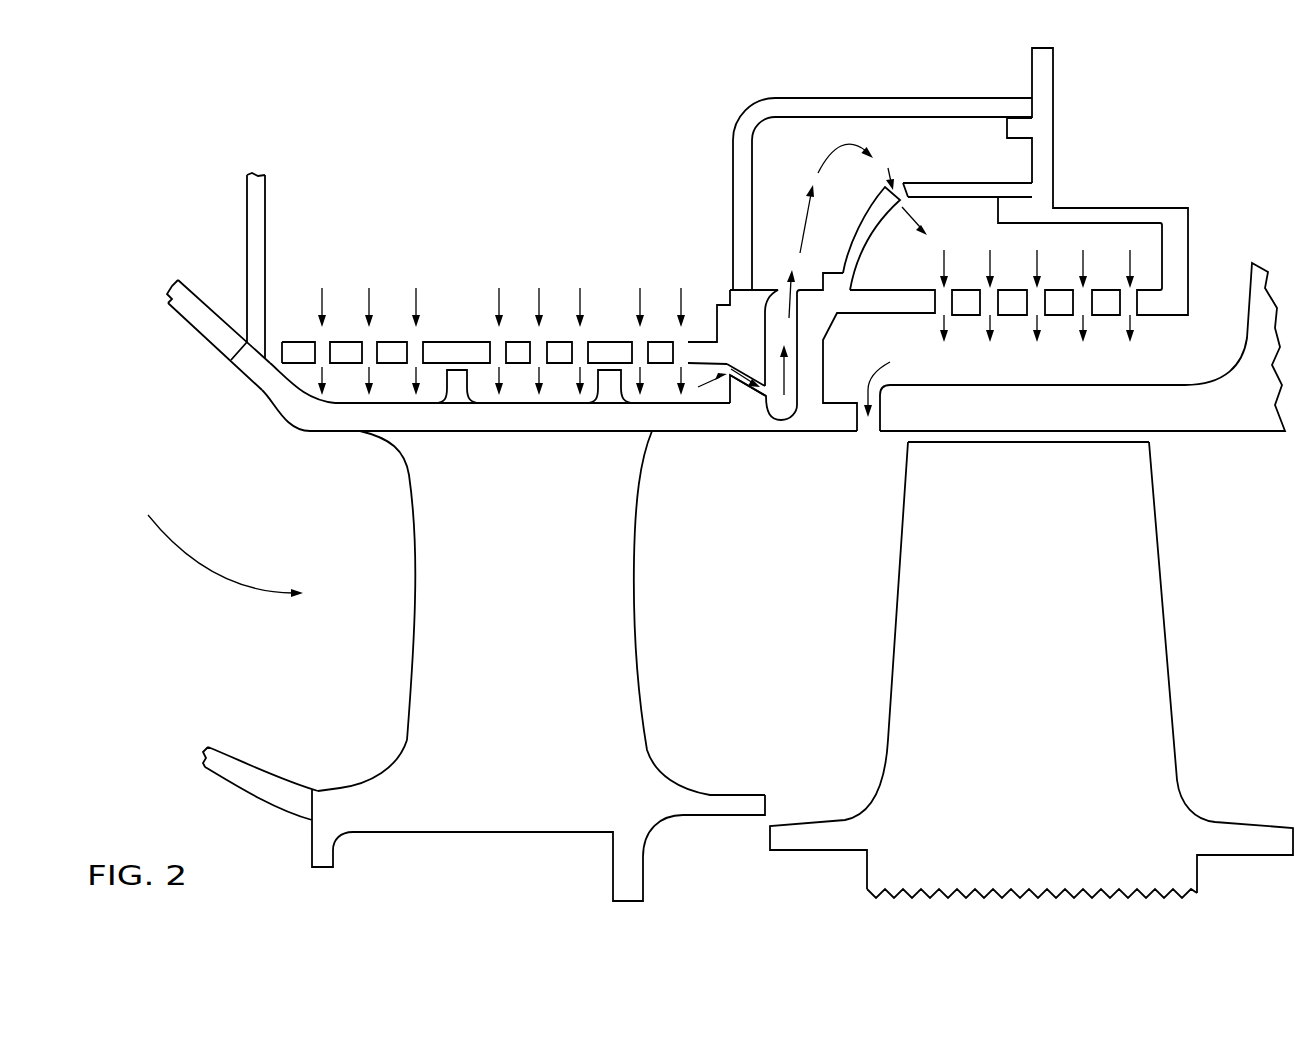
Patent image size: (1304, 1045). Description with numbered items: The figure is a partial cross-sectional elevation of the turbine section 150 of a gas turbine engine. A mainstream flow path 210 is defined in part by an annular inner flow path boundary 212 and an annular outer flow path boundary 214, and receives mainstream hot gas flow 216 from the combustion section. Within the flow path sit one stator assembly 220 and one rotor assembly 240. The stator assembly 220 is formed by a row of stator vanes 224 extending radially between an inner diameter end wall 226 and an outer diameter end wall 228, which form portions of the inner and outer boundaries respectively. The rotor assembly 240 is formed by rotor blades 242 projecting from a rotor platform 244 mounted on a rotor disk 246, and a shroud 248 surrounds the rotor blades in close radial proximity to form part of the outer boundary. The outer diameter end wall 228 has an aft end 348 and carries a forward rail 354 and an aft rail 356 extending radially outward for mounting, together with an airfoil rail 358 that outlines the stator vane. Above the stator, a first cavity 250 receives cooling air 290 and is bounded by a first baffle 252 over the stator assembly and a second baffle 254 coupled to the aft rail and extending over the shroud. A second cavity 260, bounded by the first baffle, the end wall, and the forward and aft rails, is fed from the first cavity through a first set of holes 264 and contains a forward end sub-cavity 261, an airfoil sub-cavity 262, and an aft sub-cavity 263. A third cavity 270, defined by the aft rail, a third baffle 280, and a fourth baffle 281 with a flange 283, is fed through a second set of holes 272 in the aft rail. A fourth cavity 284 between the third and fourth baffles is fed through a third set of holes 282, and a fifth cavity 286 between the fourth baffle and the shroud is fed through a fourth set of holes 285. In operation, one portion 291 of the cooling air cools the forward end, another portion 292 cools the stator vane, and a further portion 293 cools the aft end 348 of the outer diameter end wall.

The turbine section 150 is at (178, 157).
The mainstream flow path 210 is at (312, 644).
The annular inner flow path boundary 212 is at (229, 741).
The annular outer flow path boundary 214 is at (220, 373).
The mainstream hot gas flow 216 is at (205, 563).
The stator assembly 220 is at (421, 515).
The stator vane 224 is at (413, 580).
The inner diameter end wall 226 is at (345, 783).
The outer diameter end wall 228 is at (340, 432).
The rotor assembly 240 is at (909, 576).
The rotor blade 242 is at (893, 645).
The rotor platform 244 is at (808, 820).
The rotor disk 246 is at (866, 867).
The shroud 248 is at (893, 433).
The first cavity 250 is at (534, 196).
The first baffle 252 is at (433, 340).
The second baffle 254 is at (758, 97).
The second cavity 260 is at (432, 385).
The forward end sub-cavity 261 is at (305, 388).
The airfoil sub-cavity 262 is at (523, 397).
The aft sub-cavity 263 is at (690, 397).
The first set of holes 264 is at (502, 347).
The third cavity 270 is at (804, 164).
The second set of holes 272 is at (750, 393).
The third baffle 280 is at (973, 180).
The fourth baffle 281 is at (863, 317).
The third set of holes 282 is at (893, 183).
The flange 283 is at (1053, 160).
The fourth cavity 284 is at (985, 237).
The fourth set of holes 285 is at (899, 384).
The fifth cavity 286 is at (1032, 376).
The cooling air 290 is at (368, 290).
The first air flow portion 291 is at (370, 370).
The second air flow portion 292 is at (542, 370).
The third air flow portion 293 is at (672, 368).
The aft end 348 is at (788, 444).
The forward rail 354 is at (277, 368).
The aft rail 356 is at (778, 407).
The airfoil rail 358 is at (481, 368).